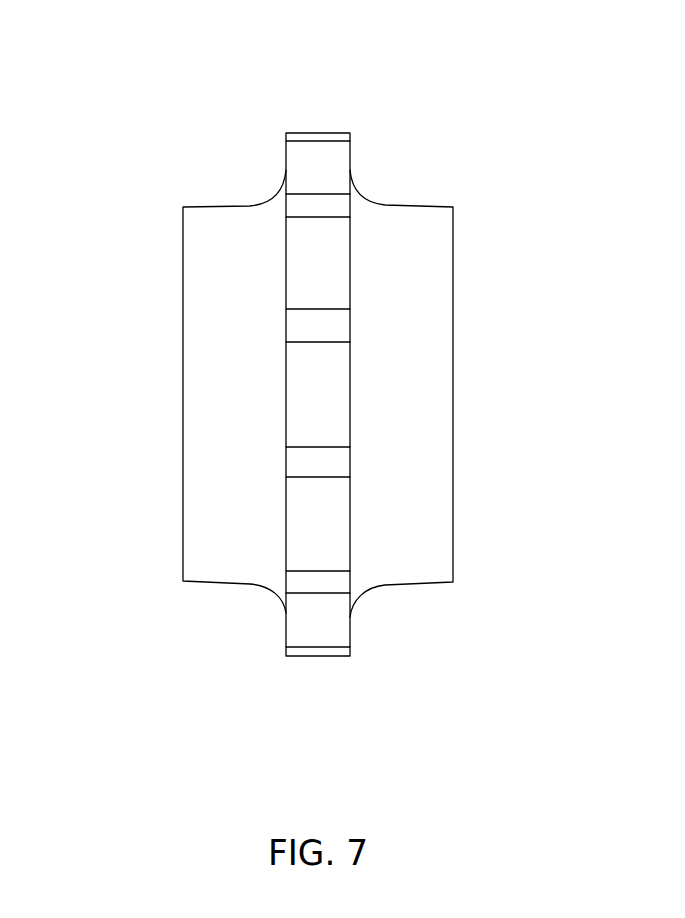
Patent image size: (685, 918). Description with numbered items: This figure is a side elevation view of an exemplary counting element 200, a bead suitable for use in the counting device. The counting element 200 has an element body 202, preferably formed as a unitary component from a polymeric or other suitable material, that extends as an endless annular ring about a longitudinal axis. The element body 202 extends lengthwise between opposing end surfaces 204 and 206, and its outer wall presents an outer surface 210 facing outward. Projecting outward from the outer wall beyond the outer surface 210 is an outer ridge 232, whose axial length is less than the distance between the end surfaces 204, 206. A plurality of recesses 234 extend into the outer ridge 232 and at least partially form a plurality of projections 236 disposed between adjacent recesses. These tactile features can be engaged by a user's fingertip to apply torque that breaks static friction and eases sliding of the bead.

The counting element 200 is at (538, 155).
The element body 202 is at (196, 198).
The end surface 204 is at (186, 553).
The end surface 206 is at (453, 547).
The outer surface 210 is at (413, 204).
The outer ridge 232 is at (286, 612).
The recesses 234 is at (298, 275).
The projections 236 is at (340, 208).